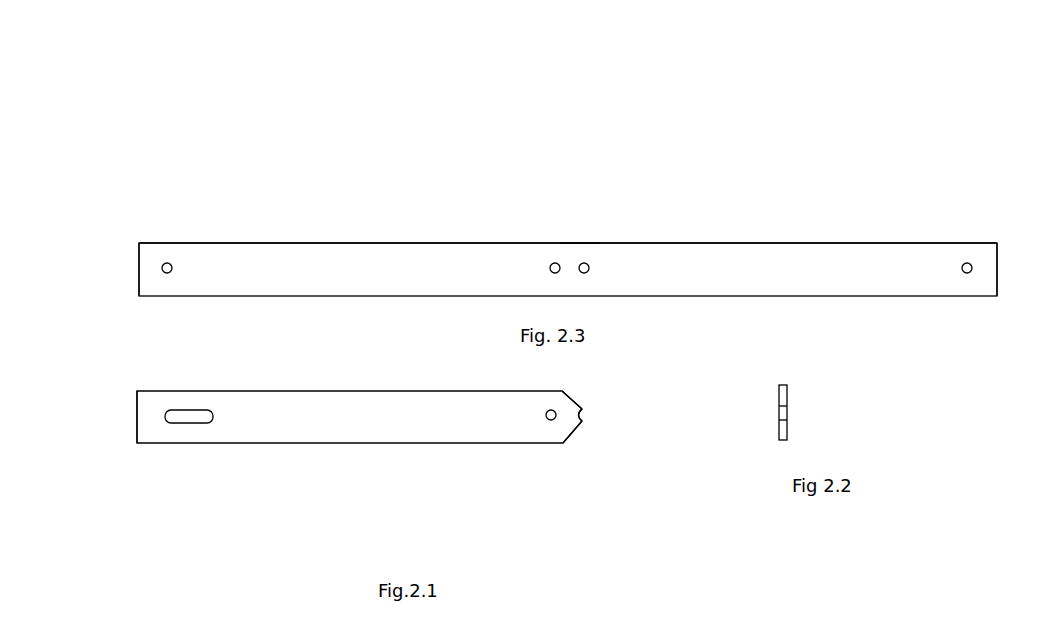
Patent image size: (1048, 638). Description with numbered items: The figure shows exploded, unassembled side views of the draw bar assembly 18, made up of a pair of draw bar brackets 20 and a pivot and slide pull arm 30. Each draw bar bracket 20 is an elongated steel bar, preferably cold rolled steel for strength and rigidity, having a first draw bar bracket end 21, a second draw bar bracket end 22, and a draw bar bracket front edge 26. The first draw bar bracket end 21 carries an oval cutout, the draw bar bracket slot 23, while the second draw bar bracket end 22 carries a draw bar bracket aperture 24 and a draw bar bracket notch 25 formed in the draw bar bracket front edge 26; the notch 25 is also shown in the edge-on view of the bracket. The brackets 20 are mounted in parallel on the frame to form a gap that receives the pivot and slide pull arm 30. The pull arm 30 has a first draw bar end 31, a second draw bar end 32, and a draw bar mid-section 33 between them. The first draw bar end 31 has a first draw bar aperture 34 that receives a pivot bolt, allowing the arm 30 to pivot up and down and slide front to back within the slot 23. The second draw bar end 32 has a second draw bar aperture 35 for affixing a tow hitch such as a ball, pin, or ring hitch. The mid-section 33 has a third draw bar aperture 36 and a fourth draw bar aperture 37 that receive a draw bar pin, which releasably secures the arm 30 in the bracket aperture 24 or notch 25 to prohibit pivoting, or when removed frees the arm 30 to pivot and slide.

In FIG. 2.3, the draw bar assembly 18 is at (468, 140).
In FIG. 2.1, the pair of draw bar brackets 20 is at (318, 425).
In FIG. 2.1, the first draw bar bracket end 21 is at (151, 447).
In FIG. 2.1, the second draw bar bracket end 22 is at (498, 456).
In FIG. 2.1, the draw bar bracket slot 23 is at (187, 412).
In FIG. 2.1, the draw bar bracket aperture 24 is at (551, 420).
In FIG. 2.1, the draw bar bracket notch 25 is at (587, 412).
In FIG. 2.2, the draw bar bracket notch 25 is at (788, 407).
In FIG. 2.2, the draw bar bracket front edge 26 is at (788, 424).
In FIG. 2.3, the pivot and slide pull arm 30 is at (370, 268).
In FIG. 2.3, the first draw bar end 31 is at (117, 238).
In FIG. 2.3, the second draw bar end 32 is at (998, 240).
In FIG. 2.3, the draw bar mid-section 33 is at (580, 190).
In FIG. 2.3, the first draw bar aperture 34 is at (167, 263).
In FIG. 2.3, the second draw bar aperture 35 is at (967, 263).
In FIG. 2.3, the third draw bar aperture 36 is at (555, 263).
In FIG. 2.3, the fourth draw bar aperture 37 is at (584, 263).